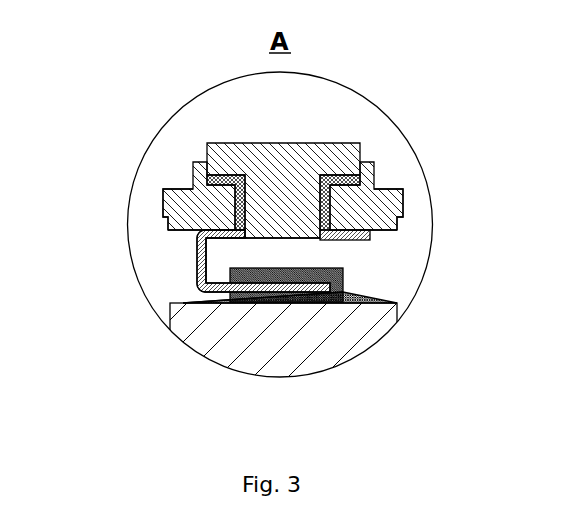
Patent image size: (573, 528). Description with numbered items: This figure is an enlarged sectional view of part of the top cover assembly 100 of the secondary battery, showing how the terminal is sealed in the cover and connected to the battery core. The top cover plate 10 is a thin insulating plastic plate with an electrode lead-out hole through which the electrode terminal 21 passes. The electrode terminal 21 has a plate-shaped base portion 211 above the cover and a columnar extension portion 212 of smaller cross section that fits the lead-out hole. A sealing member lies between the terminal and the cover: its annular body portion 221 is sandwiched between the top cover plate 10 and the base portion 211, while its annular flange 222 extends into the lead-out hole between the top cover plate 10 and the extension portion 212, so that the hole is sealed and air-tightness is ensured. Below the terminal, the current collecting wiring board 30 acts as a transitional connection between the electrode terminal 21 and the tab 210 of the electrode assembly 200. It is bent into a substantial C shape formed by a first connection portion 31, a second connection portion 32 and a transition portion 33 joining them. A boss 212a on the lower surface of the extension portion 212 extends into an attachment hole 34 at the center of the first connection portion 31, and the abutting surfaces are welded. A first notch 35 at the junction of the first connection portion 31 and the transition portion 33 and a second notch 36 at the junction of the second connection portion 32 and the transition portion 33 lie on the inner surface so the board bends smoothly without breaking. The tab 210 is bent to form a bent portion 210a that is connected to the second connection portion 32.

The top cover assembly 100 is at (269, 241).
The top cover plate 10 is at (183, 212).
The electrode terminal 21 is at (269, 150).
The base portion 211 is at (262, 150).
The extension portion 212 is at (287, 187).
The boss 212a is at (340, 230).
The body portion 221 is at (345, 165).
The annular flange 222 is at (327, 188).
The current collecting wiring board 30 is at (280, 324).
The first connection portion 31 is at (365, 251).
The second connection portion 32 is at (262, 280).
The transition portion 33 is at (198, 258).
The attachment hole 34 is at (318, 246).
The first notch 35 is at (220, 250).
The second notch 36 is at (220, 275).
The electrode assembly 200 is at (330, 340).
The tab 210 is at (312, 356).
The bent portion 210a is at (297, 298).